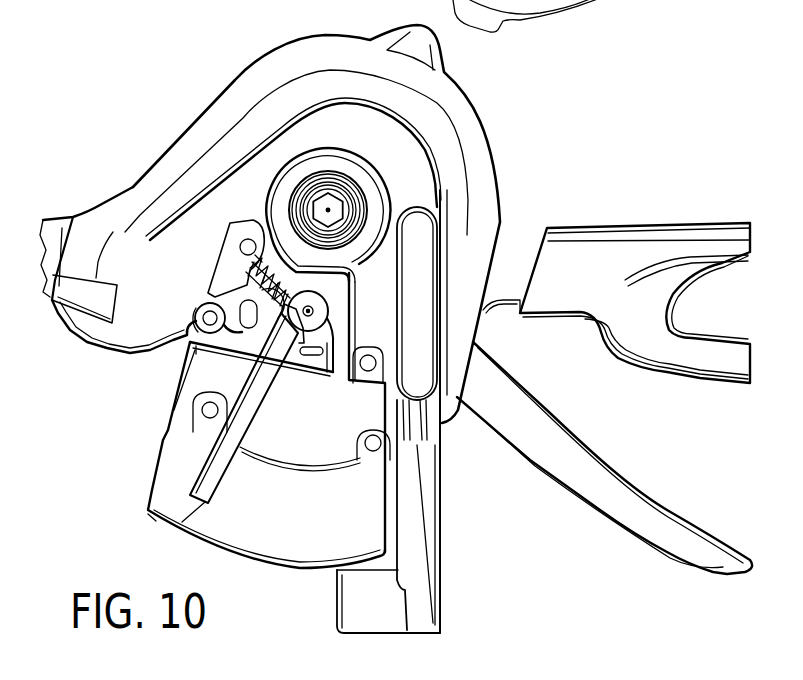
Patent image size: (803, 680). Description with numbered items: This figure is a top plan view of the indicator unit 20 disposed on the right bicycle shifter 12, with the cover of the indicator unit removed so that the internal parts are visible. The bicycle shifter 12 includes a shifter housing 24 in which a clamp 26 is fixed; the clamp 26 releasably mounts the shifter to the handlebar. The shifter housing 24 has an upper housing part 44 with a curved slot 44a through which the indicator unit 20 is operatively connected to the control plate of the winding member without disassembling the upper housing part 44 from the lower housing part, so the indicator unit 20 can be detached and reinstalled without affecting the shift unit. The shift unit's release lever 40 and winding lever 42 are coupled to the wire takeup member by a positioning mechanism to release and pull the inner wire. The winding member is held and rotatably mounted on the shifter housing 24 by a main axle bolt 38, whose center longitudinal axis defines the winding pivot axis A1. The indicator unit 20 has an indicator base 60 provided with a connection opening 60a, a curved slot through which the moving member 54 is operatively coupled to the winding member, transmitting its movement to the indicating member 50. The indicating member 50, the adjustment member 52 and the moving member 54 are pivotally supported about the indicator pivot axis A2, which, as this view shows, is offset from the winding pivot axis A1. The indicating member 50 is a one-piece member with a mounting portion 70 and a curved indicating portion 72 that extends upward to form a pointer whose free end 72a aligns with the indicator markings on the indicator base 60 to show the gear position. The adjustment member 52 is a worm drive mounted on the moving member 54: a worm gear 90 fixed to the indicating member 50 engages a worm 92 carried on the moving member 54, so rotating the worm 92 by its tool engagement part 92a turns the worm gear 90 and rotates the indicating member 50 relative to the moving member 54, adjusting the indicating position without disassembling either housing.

The bicycle shifter 12 is at (101, 99).
The indicator unit 20 is at (156, 521).
The shifter housing 24 is at (176, 142).
The clamp 26 is at (446, 591).
The main axle bolt 38 is at (318, 183).
The release lever 40 is at (680, 227).
The winding lever 42 is at (669, 515).
The upper housing part 44 is at (128, 208).
The curved slot 44a is at (215, 347).
The indicating member 50 is at (259, 433).
The adjustment member 52 is at (168, 258).
The moving member 54 is at (203, 247).
The indicator base 60 is at (157, 465).
The connection opening 60a is at (273, 333).
The mounting portion 70 is at (327, 308).
The indicating portion 72 is at (262, 392).
The free end 72a is at (182, 522).
The worm gear 90 is at (290, 298).
The worm 92 is at (272, 285).
The tool engagement part 92a is at (209, 318).
The winding pivot axis A1 is at (328, 210).
The indicator pivot axis A2 is at (311, 309).